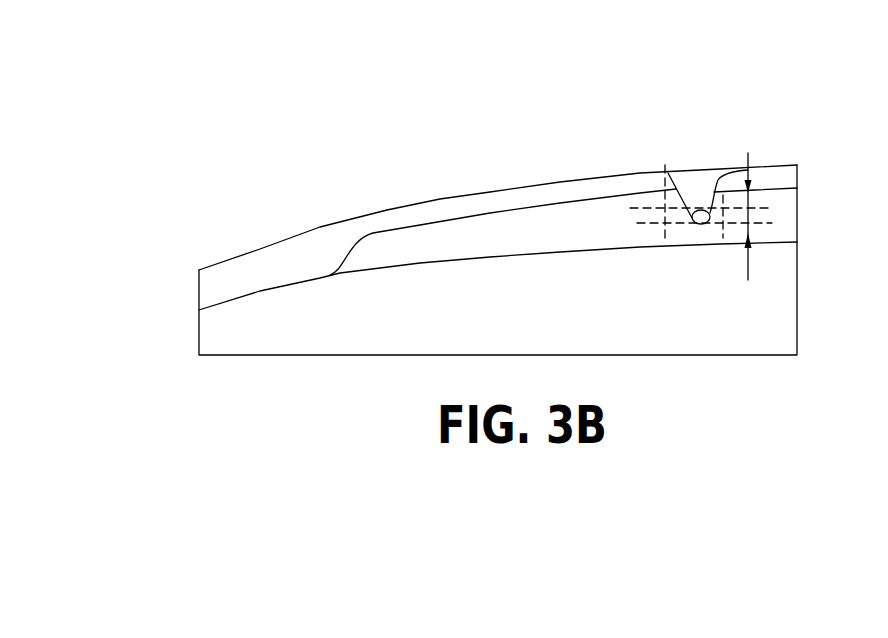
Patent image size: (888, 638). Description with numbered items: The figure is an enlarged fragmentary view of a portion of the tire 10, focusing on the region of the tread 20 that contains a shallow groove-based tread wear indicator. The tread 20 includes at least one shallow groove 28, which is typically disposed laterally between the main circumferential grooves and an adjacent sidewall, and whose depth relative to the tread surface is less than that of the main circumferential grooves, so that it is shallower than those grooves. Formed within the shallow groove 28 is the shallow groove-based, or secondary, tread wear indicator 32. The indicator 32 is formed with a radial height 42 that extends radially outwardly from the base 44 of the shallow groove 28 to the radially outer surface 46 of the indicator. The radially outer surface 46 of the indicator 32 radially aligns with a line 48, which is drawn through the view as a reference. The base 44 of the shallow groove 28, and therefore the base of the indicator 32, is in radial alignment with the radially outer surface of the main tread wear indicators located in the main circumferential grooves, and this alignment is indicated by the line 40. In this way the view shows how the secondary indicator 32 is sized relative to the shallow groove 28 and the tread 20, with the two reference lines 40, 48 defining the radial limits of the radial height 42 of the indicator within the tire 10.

The tire 10 is at (514, 142).
The tread 20 is at (427, 186).
The shallow groove 28 is at (673, 171).
The shallow groove-based tread wear indicator 32 is at (693, 223).
The line 40 is at (655, 225).
The radial height 42 is at (750, 213).
The base 44 is at (708, 214).
The radially outer surface 46 is at (703, 212).
The line 48 is at (631, 209).